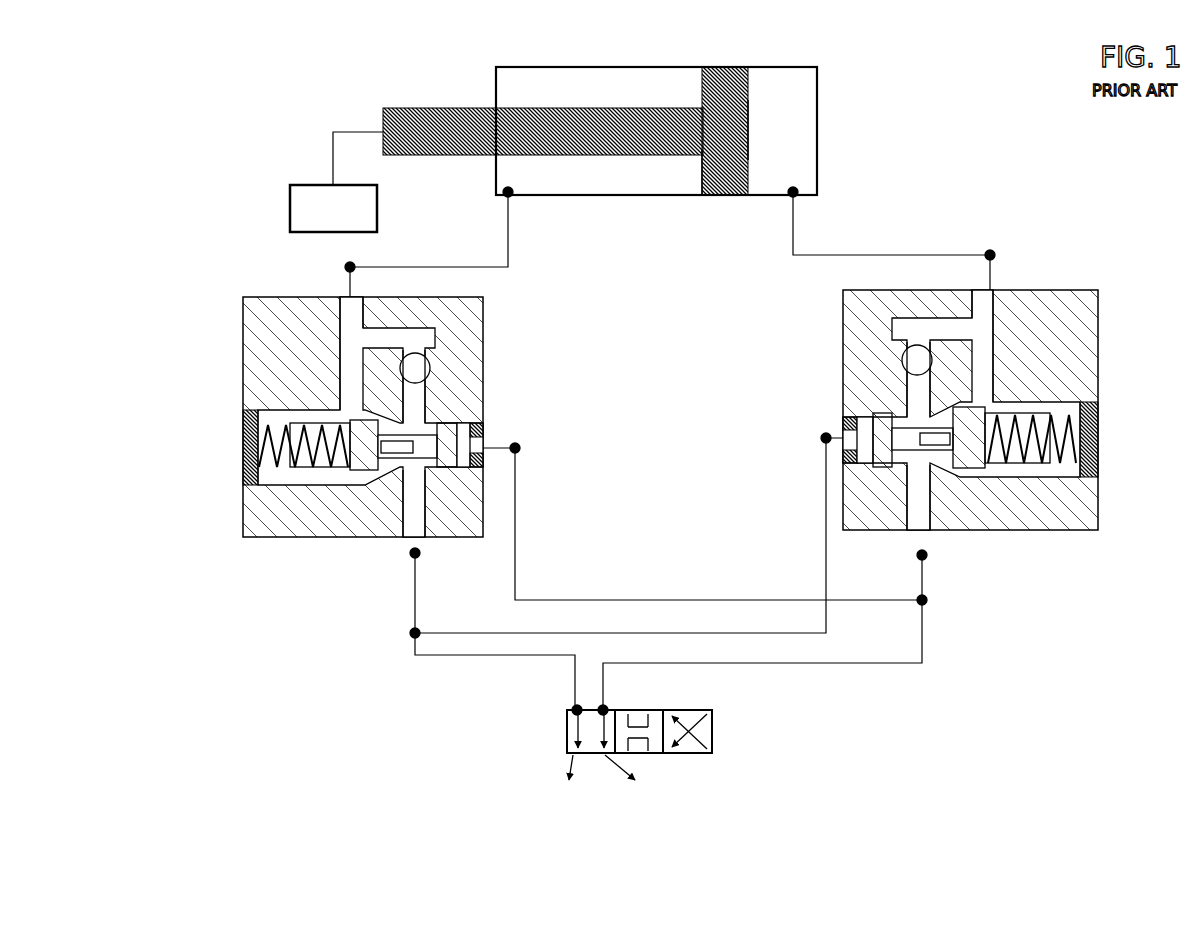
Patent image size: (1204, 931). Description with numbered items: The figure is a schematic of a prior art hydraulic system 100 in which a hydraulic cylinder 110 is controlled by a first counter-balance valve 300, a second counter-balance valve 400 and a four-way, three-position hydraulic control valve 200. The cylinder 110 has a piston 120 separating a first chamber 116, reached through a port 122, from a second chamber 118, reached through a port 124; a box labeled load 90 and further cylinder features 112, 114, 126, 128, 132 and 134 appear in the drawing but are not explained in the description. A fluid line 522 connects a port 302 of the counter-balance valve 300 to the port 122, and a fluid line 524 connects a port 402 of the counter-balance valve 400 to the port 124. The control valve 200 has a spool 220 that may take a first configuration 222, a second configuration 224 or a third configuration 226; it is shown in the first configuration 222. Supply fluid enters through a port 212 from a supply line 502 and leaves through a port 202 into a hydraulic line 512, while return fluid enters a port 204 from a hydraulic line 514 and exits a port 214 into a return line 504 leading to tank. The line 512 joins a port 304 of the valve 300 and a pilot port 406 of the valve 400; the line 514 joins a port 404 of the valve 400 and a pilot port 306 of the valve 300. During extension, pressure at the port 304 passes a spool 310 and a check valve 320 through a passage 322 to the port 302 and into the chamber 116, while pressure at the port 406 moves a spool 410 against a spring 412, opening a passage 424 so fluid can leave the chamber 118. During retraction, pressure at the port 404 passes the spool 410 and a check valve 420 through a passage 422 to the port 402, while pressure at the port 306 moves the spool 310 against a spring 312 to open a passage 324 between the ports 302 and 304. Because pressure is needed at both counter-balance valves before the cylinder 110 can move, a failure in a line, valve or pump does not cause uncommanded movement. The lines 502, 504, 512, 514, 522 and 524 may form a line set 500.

The load 90 is at (297, 190).
The prior art system 100 is at (986, 133).
The hydraulic cylinder 110 is at (822, 86).
The cylinder housing 112 is at (818, 130).
The rod end of cylinder 114 is at (496, 165).
The first chamber 116 is at (782, 88).
The second chamber 118 is at (559, 81).
The piston 120 is at (730, 172).
The port 122 is at (796, 197).
The port 124 is at (511, 197).
The piston rod 126 is at (447, 112).
The load connection 128 is at (343, 130).
The piston head face 132 is at (748, 162).
The piston rod face 134 is at (700, 186).
The hydraulic control valve 200 is at (717, 721).
The port 202 is at (605, 710).
The port 204 is at (573, 712).
The port 212 is at (605, 756).
The port 214 is at (572, 765).
The spool 220 is at (712, 745).
The first configuration 222 is at (567, 720).
The second configuration 224 is at (655, 755).
The third configuration 226 is at (682, 722).
The first counter-balance valve 300 is at (1108, 328).
The port 302 is at (992, 289).
The port 304 is at (935, 530).
The port 306 is at (843, 437).
The spool 310 is at (1035, 470).
The spring 312 is at (1010, 468).
The check valve 320 is at (915, 362).
The passage 322 is at (912, 387).
The passage 324 is at (985, 370).
The second counter-balance valve 400 is at (240, 343).
The port 402 is at (346, 296).
The port 404 is at (410, 545).
The port 406 is at (486, 446).
The spool 410 is at (305, 476).
The spring 412 is at (290, 466).
The check valve 420 is at (415, 368).
The passage 422 is at (418, 398).
The passage 424 is at (350, 390).
The line set 500 is at (522, 538).
The supply line 502 is at (650, 757).
The return line 504 is at (565, 757).
The hydraulic line 512 is at (580, 598).
The hydraulic line 514 is at (825, 525).
The fluid line 522 is at (915, 250).
The fluid line 524 is at (508, 252).